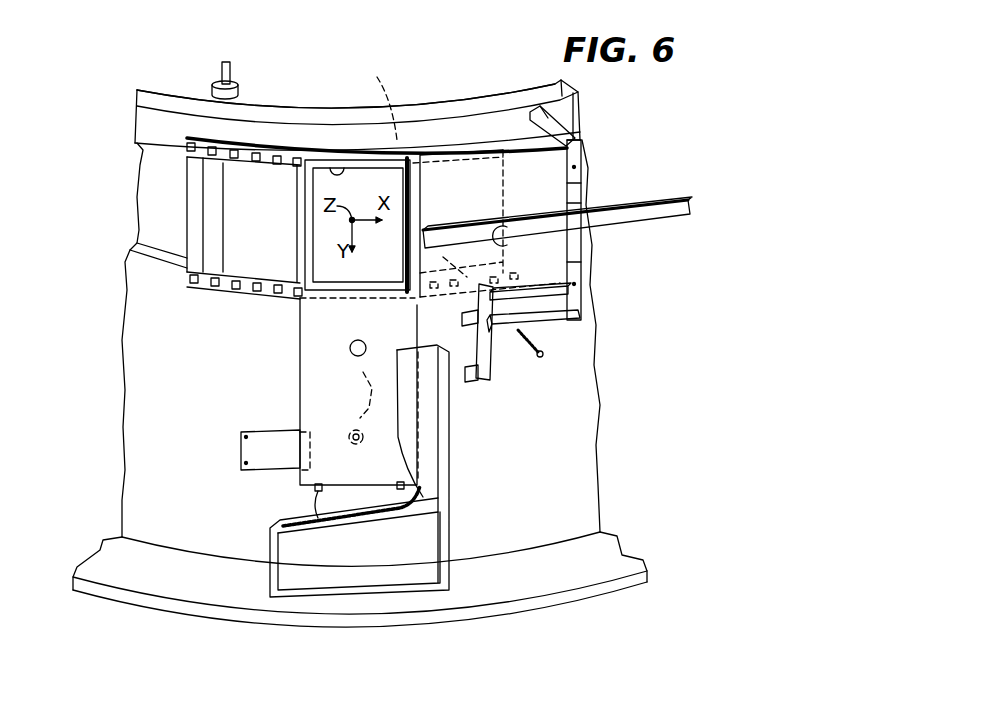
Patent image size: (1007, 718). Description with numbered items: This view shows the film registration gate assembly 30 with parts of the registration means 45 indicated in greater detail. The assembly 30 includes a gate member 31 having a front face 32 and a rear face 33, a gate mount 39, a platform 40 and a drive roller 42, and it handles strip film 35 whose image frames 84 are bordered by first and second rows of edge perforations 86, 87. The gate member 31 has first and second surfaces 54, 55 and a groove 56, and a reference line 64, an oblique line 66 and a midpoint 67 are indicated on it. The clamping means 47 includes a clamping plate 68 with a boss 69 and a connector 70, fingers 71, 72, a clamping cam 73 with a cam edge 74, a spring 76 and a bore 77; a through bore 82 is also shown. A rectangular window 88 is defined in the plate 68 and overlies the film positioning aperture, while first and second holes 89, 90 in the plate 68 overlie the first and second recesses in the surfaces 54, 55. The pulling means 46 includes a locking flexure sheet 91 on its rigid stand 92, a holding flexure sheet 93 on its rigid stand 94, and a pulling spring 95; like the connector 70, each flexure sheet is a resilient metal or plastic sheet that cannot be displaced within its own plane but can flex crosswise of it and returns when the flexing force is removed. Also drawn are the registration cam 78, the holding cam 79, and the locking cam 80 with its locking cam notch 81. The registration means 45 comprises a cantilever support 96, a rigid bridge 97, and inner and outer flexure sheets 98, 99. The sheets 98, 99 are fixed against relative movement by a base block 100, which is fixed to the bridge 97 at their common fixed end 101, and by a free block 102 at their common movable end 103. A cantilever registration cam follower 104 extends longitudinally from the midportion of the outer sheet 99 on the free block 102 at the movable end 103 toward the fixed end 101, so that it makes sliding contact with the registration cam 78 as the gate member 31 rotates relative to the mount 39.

The film registration gate assembly 30 is at (84, 75).
The gate member 31 is at (357, 96).
The front face 32 is at (337, 316).
The rear face 33 is at (346, 75).
The strip film 35 is at (207, 317).
The gate mount 39 is at (373, 582).
The platform 40 is at (594, 614).
The drive roller 42 is at (207, 64).
The registration means 45 is at (614, 186).
The pulling means 46 is at (533, 368).
The clamping means 47 is at (283, 412).
The first surface 54 is at (119, 149).
The second surface 55 is at (102, 267).
The groove 56 is at (123, 196).
The reference line 64 is at (458, 223).
The oblique line 66 is at (490, 267).
The midpoint 67 is at (468, 221).
The clamping plate 68 is at (339, 391).
The boss 69 is at (336, 335).
The connector 70 is at (242, 450).
The finger 71 is at (318, 517).
The finger 72 is at (351, 512).
The clamping cam 73 is at (381, 471).
The cam edge 74 is at (401, 397).
The spring 76 is at (337, 425).
The bore 77 is at (355, 395).
The registration cam 78 is at (579, 220).
The holding cam 79 is at (565, 337).
The locking cam 80 is at (567, 307).
The locking cam notch 81 is at (612, 274).
The through bore 82 is at (326, 369).
The image frames 84 is at (377, 236).
The first row of edge perforations 86 is at (265, 186).
The second row of edge perforations 87 is at (256, 322).
The rectangular window 88 is at (357, 182).
The first hole 89 is at (371, 96).
The second hole 90 is at (357, 317).
The locking flexure sheet 91 is at (450, 323).
The rigid stand 92 is at (467, 398).
The holding flexure sheet 93 is at (498, 365).
The rigid stand 94 is at (521, 392).
The pulling spring 95 is at (591, 366).
The cantilever support 96 is at (625, 246).
The rigid bridge 97 is at (593, 181).
The inner flexure sheet 98 is at (522, 177).
The outer flexure sheet 99 is at (605, 144).
The base block 100 is at (580, 123).
The fixed end 101 is at (603, 167).
The free block 102 is at (387, 84).
The movable end 103 is at (428, 86).
The registration cam follower 104 is at (465, 96).